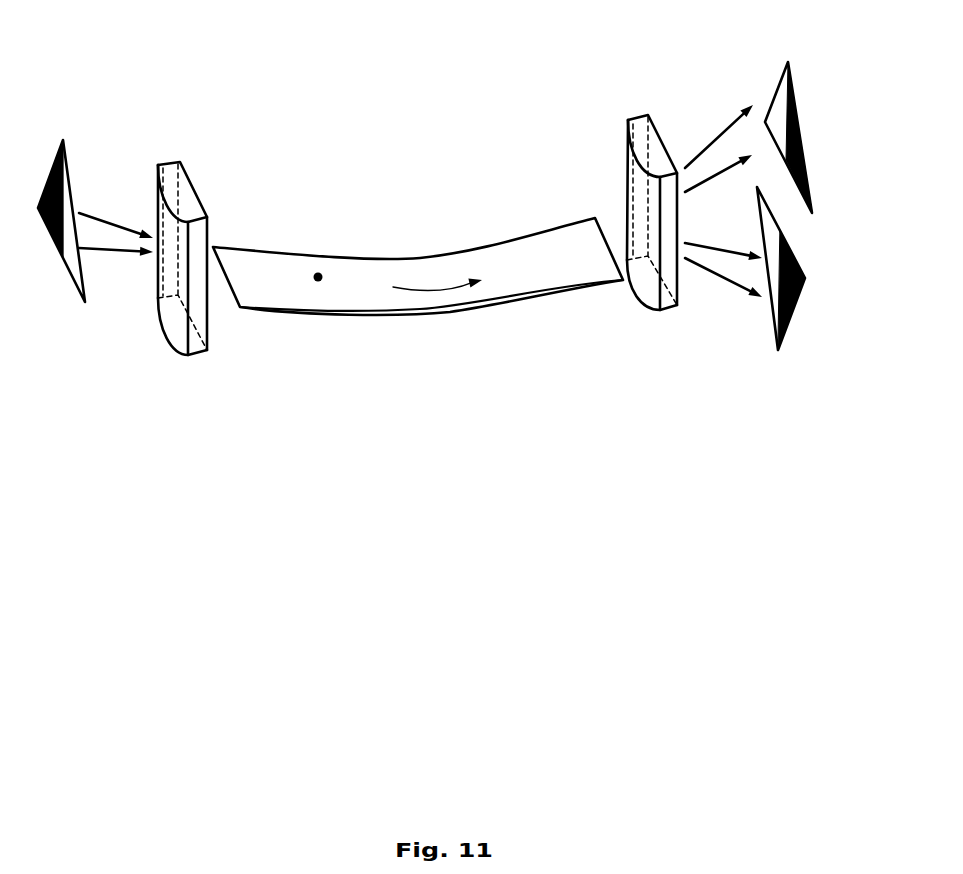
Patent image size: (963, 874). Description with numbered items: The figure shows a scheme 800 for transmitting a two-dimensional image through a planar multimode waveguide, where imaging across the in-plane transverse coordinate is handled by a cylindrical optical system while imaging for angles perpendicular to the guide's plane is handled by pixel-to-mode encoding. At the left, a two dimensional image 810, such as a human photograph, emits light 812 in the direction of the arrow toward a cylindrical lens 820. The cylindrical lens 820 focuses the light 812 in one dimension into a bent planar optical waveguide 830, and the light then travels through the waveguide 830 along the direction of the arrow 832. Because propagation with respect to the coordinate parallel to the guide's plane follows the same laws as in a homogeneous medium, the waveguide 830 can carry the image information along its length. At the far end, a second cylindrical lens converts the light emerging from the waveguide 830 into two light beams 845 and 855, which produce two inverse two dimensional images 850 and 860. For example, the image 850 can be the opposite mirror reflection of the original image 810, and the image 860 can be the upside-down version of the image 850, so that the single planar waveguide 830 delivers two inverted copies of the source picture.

The optical scanning system 800 is at (345, 80).
The two dimensional image 810 is at (55, 247).
The light 812 is at (110, 223).
The cylindrical lens 820 is at (180, 162).
The bent planar optical waveguide 830 is at (318, 277).
The arrow 832 is at (437, 278).
The light beam 845 is at (725, 132).
The image 850 is at (650, 117).
The light beam 855 is at (720, 273).
The image 860 is at (805, 278).